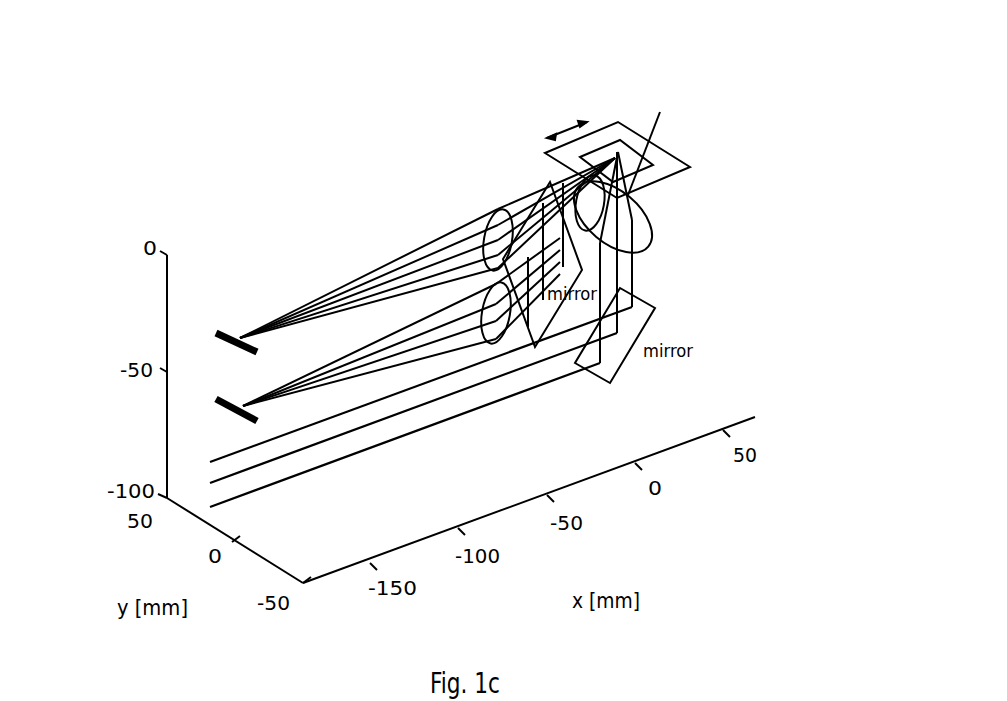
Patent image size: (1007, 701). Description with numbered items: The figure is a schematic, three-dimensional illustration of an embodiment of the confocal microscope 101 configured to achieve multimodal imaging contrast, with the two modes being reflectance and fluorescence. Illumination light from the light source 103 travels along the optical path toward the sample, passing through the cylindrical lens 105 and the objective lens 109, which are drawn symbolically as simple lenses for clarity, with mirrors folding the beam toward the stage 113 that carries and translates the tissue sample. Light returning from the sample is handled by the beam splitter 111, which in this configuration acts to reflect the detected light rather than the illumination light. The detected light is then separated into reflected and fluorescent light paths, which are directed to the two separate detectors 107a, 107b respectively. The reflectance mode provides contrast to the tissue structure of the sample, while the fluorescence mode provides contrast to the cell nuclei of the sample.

The confocal microscope 101 is at (318, 226).
The light source 103 is at (273, 461).
The cylindrical lens 105 is at (657, 237).
The detector 107a is at (222, 401).
The detector 107b is at (222, 334).
The objective lens 109 is at (547, 183).
The beam splitter 111 is at (640, 197).
The stage 113 is at (602, 128).